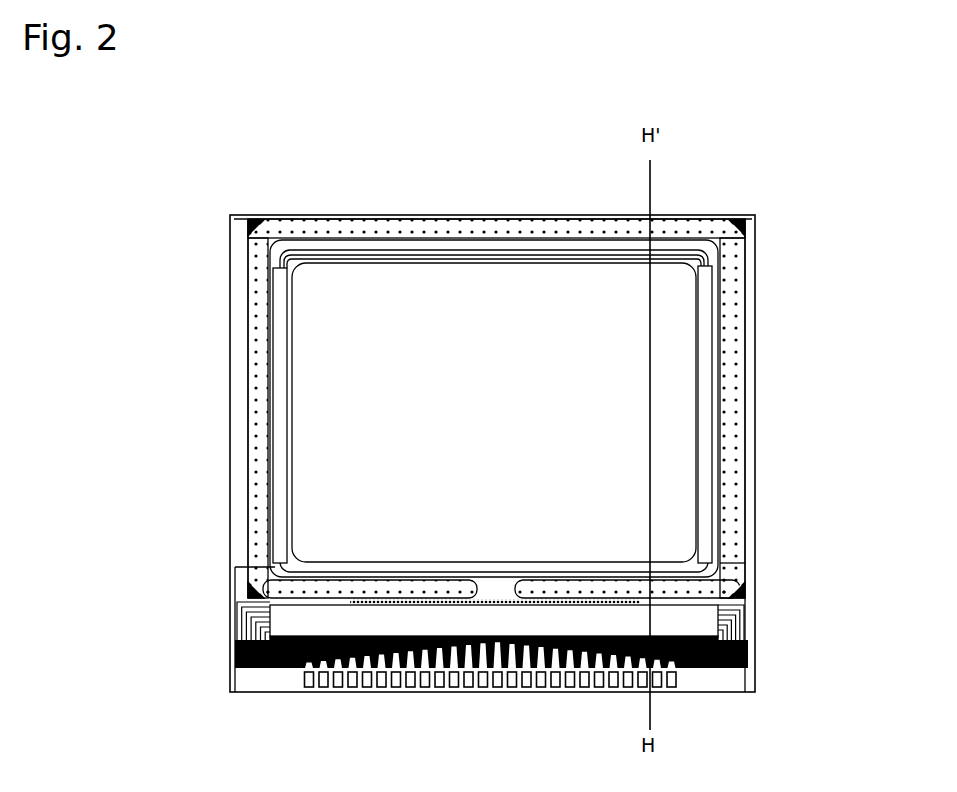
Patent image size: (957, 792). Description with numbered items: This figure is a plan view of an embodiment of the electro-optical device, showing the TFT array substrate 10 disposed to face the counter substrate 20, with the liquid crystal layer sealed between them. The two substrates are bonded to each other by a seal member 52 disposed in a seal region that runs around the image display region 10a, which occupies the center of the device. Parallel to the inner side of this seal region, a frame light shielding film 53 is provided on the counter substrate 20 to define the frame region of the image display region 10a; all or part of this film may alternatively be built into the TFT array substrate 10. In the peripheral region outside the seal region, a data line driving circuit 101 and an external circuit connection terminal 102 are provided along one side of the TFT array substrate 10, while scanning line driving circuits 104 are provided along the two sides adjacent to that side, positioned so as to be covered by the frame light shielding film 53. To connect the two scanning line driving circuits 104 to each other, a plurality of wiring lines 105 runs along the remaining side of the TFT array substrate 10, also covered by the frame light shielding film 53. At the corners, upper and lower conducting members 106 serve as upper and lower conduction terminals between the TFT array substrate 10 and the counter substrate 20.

The TFT array substrate 10 is at (358, 216).
The image display region 10a is at (494, 412).
The counter substrate 20 is at (490, 215).
The seal member 52 is at (736, 368).
The frame light shielding film 53 is at (705, 557).
The data line driving circuit 101 is at (313, 622).
The external circuit connection terminal 102 is at (462, 680).
The scanning line driving circuit 104 is at (279, 290).
The wiring lines 105 is at (407, 230).
The upper and lower conducting members 106 is at (248, 219).